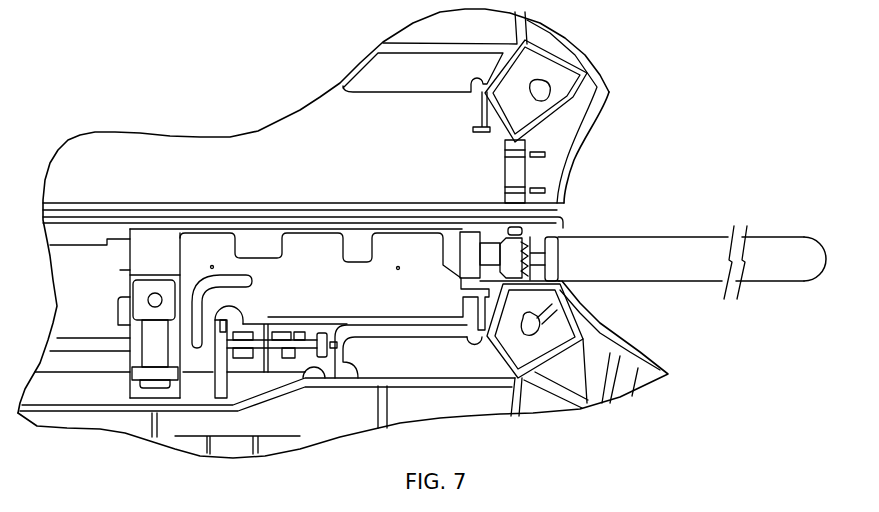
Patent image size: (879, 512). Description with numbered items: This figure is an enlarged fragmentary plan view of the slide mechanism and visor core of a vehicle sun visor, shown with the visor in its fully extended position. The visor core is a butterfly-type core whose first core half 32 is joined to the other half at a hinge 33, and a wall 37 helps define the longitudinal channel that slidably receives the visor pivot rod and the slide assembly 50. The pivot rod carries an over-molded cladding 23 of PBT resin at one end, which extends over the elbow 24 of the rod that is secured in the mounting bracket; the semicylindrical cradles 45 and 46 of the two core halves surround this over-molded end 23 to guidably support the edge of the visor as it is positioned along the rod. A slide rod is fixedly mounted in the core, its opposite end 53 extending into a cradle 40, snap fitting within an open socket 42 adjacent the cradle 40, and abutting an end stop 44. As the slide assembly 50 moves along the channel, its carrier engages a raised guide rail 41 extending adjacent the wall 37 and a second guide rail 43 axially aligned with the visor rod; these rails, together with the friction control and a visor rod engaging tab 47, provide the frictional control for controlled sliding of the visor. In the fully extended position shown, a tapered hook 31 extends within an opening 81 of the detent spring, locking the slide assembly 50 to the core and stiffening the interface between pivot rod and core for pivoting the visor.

The over-molded cladding 23 is at (656, 246).
The elbow 24 is at (810, 255).
The tapered hook 31 is at (467, 285).
The first core half 32 is at (570, 63).
The hinge 33 is at (566, 208).
The wall 37 is at (100, 408).
The cradle 40 is at (278, 328).
The raised guide rail 41 is at (63, 393).
The open socket 42 is at (288, 358).
The second guide rail 43 is at (73, 257).
The end stop 44 is at (320, 333).
The semicylindrical cradle 45 is at (503, 175).
The semicylindrical cradle 46 is at (540, 312).
The visor rod engaging tab 47 is at (538, 258).
The slide assembly 50 is at (316, 236).
The opposite end 53 is at (247, 344).
The opening 81 is at (462, 288).